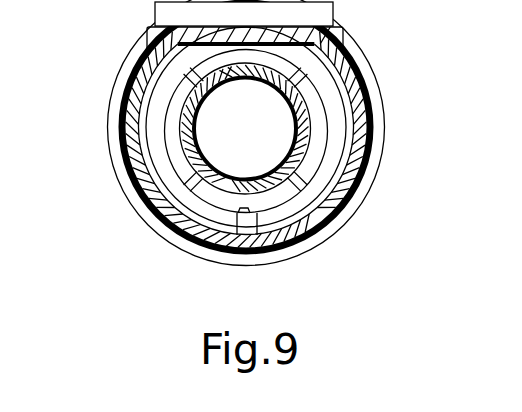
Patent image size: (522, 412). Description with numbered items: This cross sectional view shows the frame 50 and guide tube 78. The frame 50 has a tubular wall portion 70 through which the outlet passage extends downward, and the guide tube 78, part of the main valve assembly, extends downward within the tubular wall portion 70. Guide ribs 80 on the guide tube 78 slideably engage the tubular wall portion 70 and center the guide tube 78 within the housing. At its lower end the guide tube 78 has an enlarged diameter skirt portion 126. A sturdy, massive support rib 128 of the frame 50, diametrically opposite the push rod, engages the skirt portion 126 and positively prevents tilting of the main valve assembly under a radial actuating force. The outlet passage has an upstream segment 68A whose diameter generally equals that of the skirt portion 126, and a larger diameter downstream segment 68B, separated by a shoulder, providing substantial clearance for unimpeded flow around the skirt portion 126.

The frame 50 is at (116, 99).
The tubular wall portion 70 is at (350, 212).
The guide ribs 80 is at (338, 40).
The enlarged diameter skirt portion 126 is at (180, 125).
The guide tube 78 is at (303, 108).
The upstream segment 68A is at (185, 188).
The downstream segment 68B is at (358, 153).
The support rib 128 is at (236, 238).